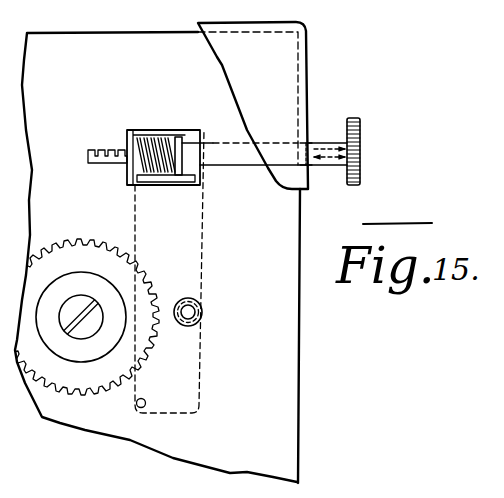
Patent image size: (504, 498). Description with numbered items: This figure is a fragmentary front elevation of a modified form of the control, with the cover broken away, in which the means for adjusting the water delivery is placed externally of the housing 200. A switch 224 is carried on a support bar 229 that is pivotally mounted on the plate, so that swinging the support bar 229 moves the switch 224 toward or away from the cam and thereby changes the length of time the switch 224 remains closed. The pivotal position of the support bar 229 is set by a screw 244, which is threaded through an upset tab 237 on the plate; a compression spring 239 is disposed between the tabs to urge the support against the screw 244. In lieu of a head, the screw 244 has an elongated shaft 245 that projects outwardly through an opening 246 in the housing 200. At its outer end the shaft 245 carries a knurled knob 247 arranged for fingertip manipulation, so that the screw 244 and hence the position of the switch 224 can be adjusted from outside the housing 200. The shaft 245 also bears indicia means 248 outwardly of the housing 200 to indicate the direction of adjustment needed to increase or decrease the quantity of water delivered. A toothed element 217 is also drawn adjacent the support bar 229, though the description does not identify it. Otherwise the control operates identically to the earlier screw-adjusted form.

The housing 200 is at (309, 53).
The gear 217 is at (65, 241).
The switch 224 is at (168, 300).
The support bar 229 is at (204, 252).
The upset tab 237 is at (130, 181).
The compression spring 239 is at (161, 137).
The screw 244 is at (103, 148).
The elongated shaft 245 is at (242, 157).
The opening 246 is at (315, 138).
The knurled knob 247 is at (360, 141).
The indicia means 248 is at (328, 168).